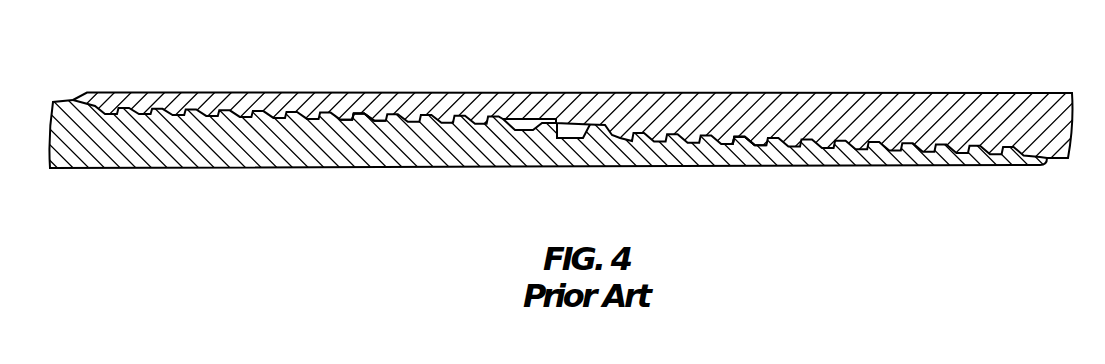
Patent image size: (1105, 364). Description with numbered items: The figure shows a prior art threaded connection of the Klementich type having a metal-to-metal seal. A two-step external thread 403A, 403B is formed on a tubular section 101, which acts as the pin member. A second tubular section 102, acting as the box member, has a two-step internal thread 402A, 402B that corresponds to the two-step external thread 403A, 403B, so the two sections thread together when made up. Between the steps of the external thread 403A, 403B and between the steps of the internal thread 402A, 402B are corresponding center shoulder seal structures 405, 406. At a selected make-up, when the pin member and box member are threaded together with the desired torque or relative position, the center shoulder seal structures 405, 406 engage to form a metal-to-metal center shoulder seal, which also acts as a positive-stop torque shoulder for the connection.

The tubular section 101 is at (298, 168).
The tubular section 102 is at (862, 93).
The two-step internal thread 402A is at (380, 120).
The two-step internal thread 402B is at (755, 140).
The two-step external thread 403A is at (360, 124).
The two-step external thread 403B is at (737, 140).
The center shoulder seal structure 405 is at (547, 125).
The center shoulder seal structure 406 is at (578, 132).